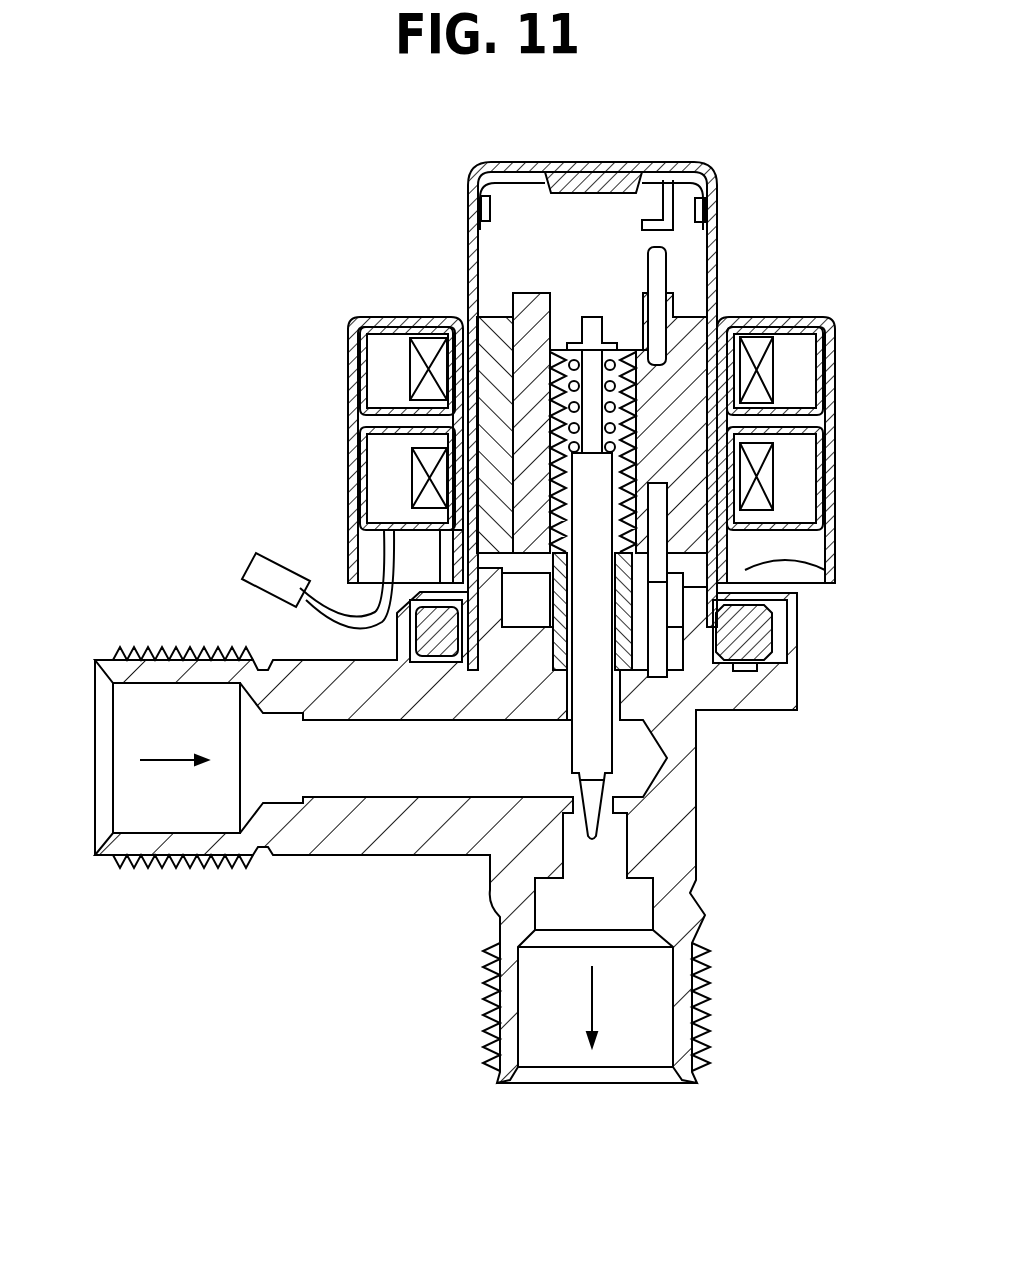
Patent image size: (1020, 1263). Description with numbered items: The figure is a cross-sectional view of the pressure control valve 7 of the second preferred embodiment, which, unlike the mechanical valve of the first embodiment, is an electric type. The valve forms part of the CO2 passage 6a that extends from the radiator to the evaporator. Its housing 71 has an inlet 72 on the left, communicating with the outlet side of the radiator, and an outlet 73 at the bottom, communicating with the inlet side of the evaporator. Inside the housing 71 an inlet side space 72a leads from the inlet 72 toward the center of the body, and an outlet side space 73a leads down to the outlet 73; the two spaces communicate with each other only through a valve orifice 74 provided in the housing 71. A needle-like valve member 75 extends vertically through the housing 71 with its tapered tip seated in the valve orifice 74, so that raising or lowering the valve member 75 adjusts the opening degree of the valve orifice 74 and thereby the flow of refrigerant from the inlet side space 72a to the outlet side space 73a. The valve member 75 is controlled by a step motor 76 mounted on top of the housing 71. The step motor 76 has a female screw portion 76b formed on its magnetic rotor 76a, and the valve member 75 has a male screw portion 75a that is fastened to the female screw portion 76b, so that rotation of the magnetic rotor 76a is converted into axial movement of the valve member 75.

The pressure control valve 7 is at (727, 231).
The CO2 passage 6a is at (490, 765).
The housing 71 is at (700, 739).
The inlet 72 is at (150, 722).
The inlet side space 72a is at (363, 740).
The outlet 73 is at (620, 1037).
The outlet side space 73a is at (633, 910).
The valve orifice 74 is at (577, 817).
The valve member 75 is at (597, 692).
The male screw portion 75a is at (645, 408).
The step motor 76 is at (838, 546).
The magnetic rotor 76a is at (527, 320).
The female screw portion 76b is at (555, 397).